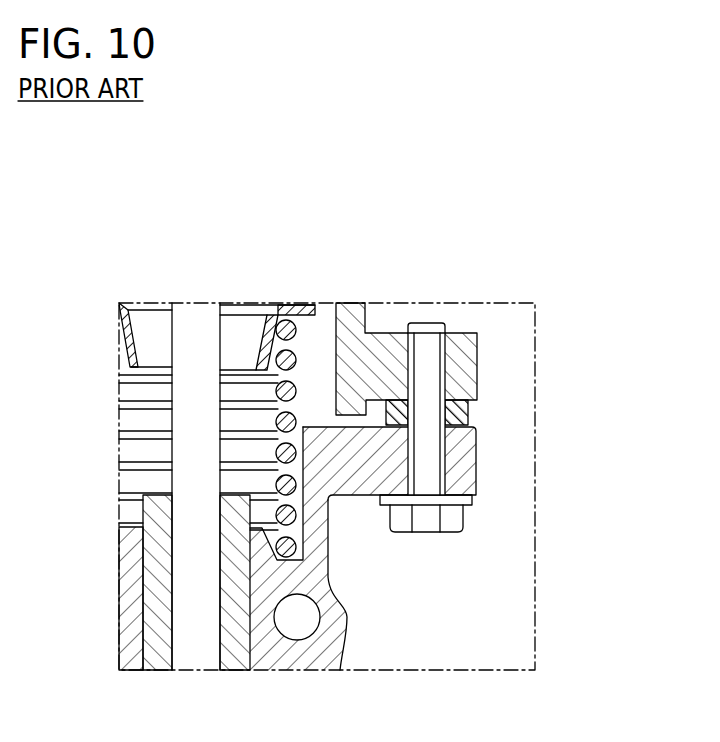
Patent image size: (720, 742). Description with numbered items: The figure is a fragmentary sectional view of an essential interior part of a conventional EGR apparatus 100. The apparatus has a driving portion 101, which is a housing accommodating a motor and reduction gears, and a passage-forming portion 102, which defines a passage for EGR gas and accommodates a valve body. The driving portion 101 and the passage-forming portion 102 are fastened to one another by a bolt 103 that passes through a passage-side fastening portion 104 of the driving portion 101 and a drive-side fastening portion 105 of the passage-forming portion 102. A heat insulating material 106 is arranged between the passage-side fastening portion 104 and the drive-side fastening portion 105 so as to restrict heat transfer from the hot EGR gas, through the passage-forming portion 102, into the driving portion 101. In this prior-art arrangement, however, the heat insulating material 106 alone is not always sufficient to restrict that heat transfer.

The conventional EGR apparatus 100 is at (577, 218).
The driving portion 101 is at (458, 323).
The passage-forming portion 102 is at (433, 602).
The bolt 103 is at (428, 480).
The passage-side fastening portion 104 is at (467, 343).
The drive-side fastening portion 105 is at (467, 472).
The heat insulating material 106 is at (467, 410).